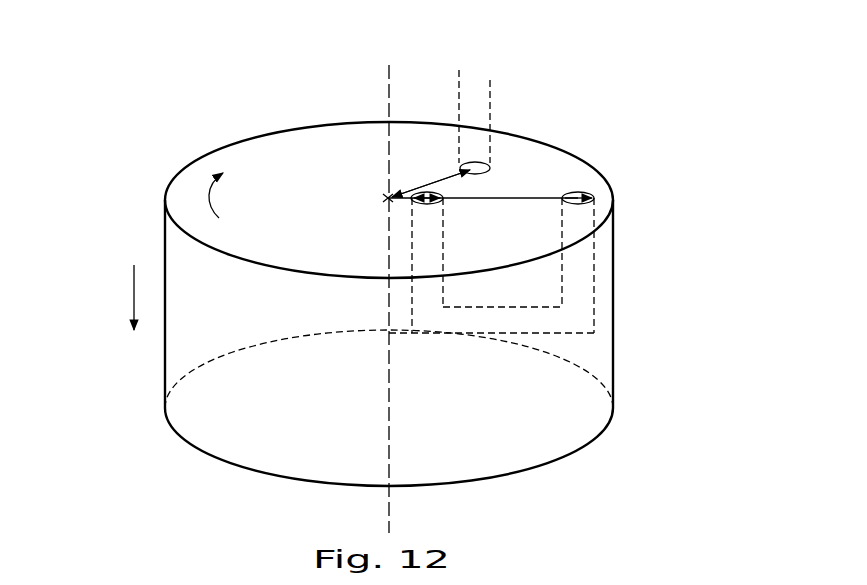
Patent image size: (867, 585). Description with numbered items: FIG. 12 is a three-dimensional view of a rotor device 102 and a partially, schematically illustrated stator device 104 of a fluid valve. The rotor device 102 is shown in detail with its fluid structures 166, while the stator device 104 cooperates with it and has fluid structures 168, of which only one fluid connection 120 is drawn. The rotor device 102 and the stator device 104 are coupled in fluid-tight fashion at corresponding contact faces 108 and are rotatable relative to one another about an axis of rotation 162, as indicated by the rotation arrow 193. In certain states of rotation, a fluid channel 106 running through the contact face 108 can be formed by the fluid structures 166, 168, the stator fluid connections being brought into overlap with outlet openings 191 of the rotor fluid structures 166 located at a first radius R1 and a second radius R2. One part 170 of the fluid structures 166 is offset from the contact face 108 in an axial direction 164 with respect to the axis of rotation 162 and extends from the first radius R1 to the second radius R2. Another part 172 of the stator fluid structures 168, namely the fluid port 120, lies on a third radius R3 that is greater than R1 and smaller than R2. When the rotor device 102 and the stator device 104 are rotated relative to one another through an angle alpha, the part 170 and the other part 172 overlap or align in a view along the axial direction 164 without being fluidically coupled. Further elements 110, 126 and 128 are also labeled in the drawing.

The rotor device 102 is at (163, 146).
The stator device 104 is at (457, 68).
The fluid channel 106 is at (428, 303).
The contact face 108 is at (267, 150).
The surface region 110 is at (313, 155).
The fluid connection 120 is at (480, 88).
The outer wall 126 is at (417, 262).
The bottom region 128 is at (575, 330).
The axis of rotation 162 is at (388, 318).
The axial direction 164 is at (133, 296).
The fluid structures 166 is at (567, 267).
The fluid structures 168 is at (463, 113).
The part 170 is at (478, 323).
The other part 172 is at (490, 172).
The outlet openings 191 is at (443, 193).
The rotation arrow 193 is at (207, 197).
The first radius R1 is at (392, 201).
The second radius R2 is at (503, 200).
The third radius R3 is at (422, 187).
The angle α alpha is at (449, 191).